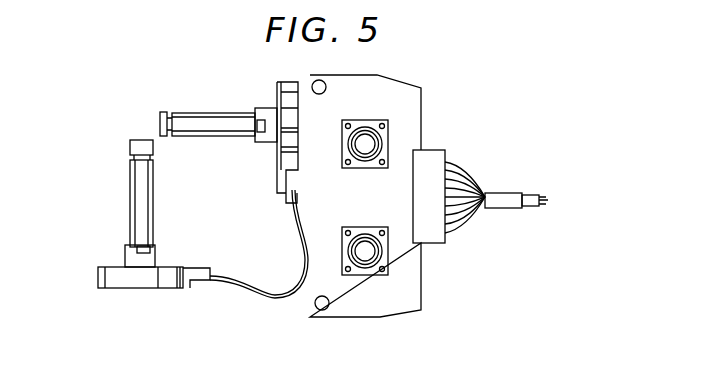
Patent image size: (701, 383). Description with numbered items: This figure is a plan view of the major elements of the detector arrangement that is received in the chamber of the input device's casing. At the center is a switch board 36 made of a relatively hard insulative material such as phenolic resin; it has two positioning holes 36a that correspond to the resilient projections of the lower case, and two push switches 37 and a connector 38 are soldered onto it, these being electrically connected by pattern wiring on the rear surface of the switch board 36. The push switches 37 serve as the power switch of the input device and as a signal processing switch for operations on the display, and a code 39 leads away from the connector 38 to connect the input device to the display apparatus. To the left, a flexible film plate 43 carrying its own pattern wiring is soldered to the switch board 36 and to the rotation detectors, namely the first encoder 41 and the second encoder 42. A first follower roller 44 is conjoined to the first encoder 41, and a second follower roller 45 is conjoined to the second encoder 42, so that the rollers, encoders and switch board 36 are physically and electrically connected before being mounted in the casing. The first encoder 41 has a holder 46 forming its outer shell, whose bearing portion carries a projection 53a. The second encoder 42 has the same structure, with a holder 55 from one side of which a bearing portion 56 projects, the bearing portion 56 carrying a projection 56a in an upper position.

The switch board 36 is at (425, 96).
The positioning holes 36a is at (327, 87).
The push switches 37 is at (367, 140).
The connector 38 is at (445, 152).
The code 39 is at (528, 196).
The first encoder 41 is at (266, 96).
The second encoder 42 is at (173, 295).
The flexible film plate 43 is at (260, 294).
The first follower roller 44 is at (207, 115).
The second follower roller 45 is at (133, 171).
The holder 46 is at (287, 83).
The projection 53a is at (260, 133).
The holder 55 is at (105, 272).
The bearing portion 56 is at (127, 252).
The projection 56a is at (150, 258).